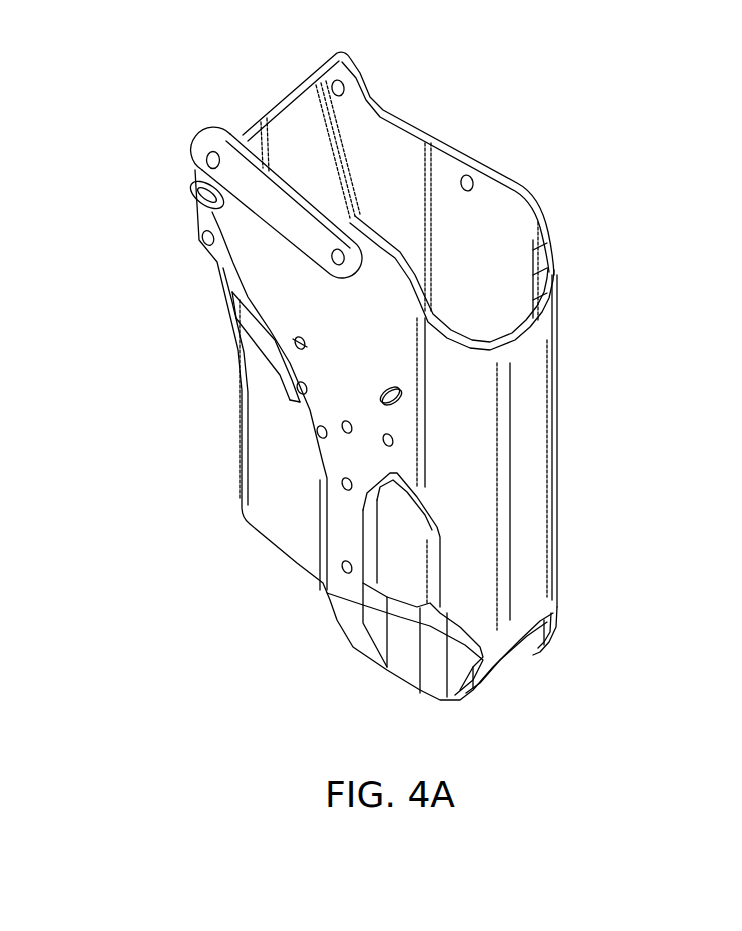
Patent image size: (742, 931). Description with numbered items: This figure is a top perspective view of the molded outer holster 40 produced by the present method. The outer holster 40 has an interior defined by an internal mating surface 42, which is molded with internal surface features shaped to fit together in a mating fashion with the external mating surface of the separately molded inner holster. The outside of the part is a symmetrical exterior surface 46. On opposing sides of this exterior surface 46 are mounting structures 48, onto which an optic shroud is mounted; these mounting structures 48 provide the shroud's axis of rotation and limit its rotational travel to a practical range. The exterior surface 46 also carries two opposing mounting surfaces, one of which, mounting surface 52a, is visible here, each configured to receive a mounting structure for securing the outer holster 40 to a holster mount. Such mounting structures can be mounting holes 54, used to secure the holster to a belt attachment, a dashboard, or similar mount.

The outer holster 40 is at (270, 594).
The internal mating surface 42 is at (381, 176).
The exterior surface 46 is at (287, 473).
The mounting structure 48 is at (205, 212).
The mounting surface 52a is at (345, 458).
The mounting hole 54 is at (405, 398).